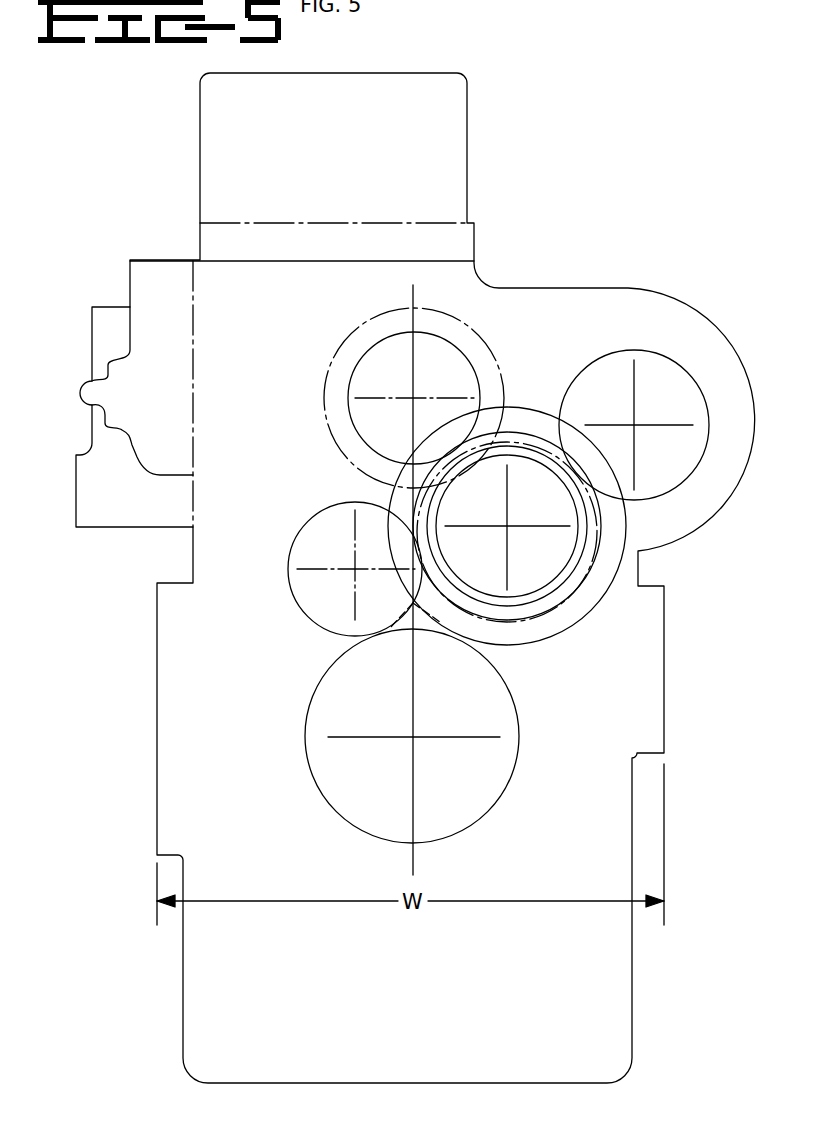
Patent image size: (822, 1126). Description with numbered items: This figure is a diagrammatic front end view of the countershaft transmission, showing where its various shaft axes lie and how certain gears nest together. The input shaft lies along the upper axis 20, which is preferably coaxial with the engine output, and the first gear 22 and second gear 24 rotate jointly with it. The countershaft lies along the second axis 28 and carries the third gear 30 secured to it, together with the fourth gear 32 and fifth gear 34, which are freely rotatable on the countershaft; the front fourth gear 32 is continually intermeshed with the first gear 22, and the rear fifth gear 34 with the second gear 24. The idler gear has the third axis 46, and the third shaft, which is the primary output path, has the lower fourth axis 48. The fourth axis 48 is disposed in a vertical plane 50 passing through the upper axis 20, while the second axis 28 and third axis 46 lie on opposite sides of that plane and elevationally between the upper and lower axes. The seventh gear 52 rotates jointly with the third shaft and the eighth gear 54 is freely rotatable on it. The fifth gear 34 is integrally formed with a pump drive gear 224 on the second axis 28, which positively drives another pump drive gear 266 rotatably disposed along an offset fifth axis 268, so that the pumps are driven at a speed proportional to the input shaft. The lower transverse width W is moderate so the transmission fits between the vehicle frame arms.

The upper axis 20 is at (413, 399).
The first gear 22 is at (355, 368).
The second gear 24 is at (362, 318).
The second axis 28 is at (507, 526).
The third gear 30 is at (626, 526).
The fourth gear 32 is at (588, 582).
The fifth gear 34 is at (552, 582).
The third axis 46 is at (355, 569).
The fourth axis 48 is at (412, 738).
The vertical plane 50 is at (413, 288).
The seventh gear 52 is at (473, 736).
The eighth gear 54 is at (519, 720).
The pump drive gear 224 is at (528, 622).
The pump drive gear 266 is at (641, 350).
The fifth axis 268 is at (634, 425).